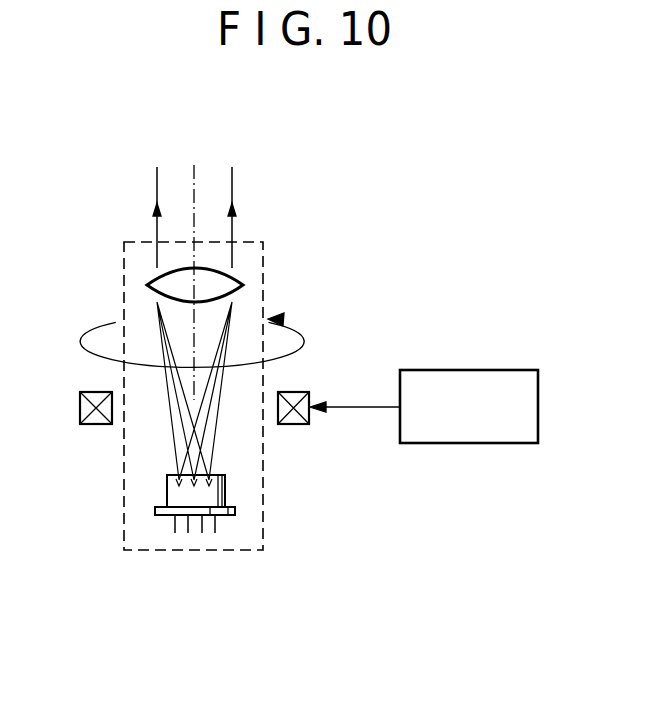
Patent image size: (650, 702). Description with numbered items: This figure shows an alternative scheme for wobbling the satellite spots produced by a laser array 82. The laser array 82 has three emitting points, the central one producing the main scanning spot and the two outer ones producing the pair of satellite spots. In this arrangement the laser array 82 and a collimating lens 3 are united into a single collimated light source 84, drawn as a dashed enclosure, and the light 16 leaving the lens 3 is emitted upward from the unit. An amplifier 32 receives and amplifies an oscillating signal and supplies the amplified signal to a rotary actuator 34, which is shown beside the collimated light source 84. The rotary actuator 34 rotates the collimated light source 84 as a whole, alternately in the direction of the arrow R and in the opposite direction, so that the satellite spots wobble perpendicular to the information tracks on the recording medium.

The lens 3 is at (147, 285).
The light beam 16 is at (195, 193).
The arrow R is at (205, 340).
The amplifier 32 is at (472, 443).
The rotary actuator 34 is at (306, 392).
The laser array 82 is at (226, 494).
The collimated light source 84 is at (123, 498).